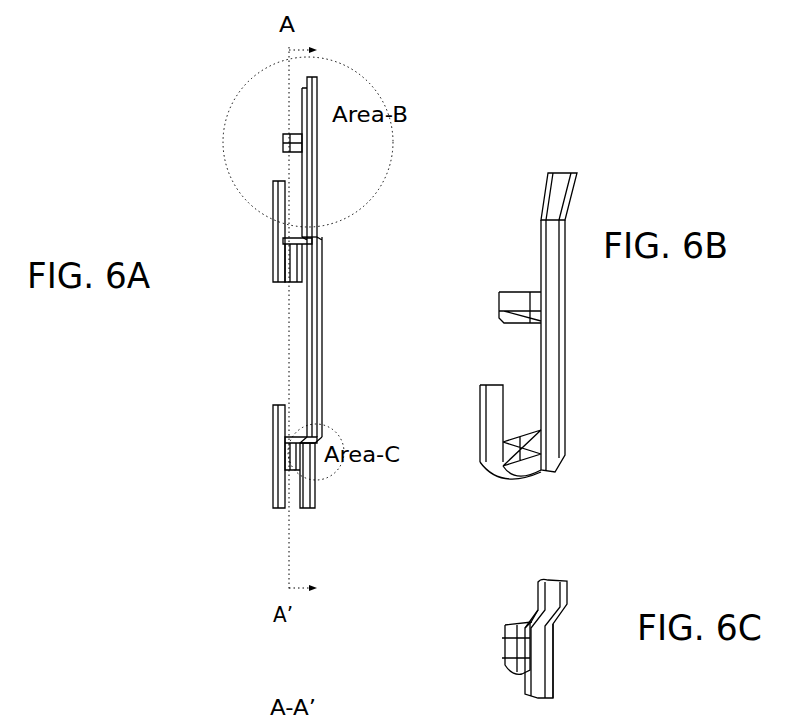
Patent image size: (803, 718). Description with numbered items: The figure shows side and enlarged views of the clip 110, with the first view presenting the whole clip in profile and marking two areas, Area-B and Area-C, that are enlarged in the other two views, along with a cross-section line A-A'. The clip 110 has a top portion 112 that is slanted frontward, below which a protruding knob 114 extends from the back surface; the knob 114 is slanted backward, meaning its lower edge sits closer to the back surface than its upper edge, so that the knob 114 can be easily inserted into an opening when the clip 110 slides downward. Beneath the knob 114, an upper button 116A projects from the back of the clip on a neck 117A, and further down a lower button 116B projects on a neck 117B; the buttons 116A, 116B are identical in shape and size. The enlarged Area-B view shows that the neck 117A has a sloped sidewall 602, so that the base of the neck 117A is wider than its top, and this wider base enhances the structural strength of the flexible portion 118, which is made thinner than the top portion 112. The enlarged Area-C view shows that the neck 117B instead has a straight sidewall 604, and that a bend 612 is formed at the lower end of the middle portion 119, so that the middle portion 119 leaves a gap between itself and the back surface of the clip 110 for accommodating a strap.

In FIG. 6A, the clip 110 is at (208, 88).
In FIG. 6A, the top portion 112 is at (320, 86).
In FIG. 6B, the top portion 112 is at (556, 203).
In FIG. 6A, the knob 114 is at (283, 142).
In FIG. 6B, the knob 114 is at (514, 306).
In FIG. 6A, the flexible portion 118 is at (316, 180).
In FIG. 6B, the flexible portion 118 is at (567, 373).
In FIG. 6A, the upper button 116A is at (275, 250).
In FIG. 6B, the upper button 116A is at (481, 430).
In FIG. 6A, the neck 117A is at (293, 240).
In FIG. 6B, the neck 117A is at (517, 467).
In FIG. 6A, the middle portion 119 is at (319, 346).
In FIG. 6C, the middle portion 119 is at (554, 598).
In FIG. 6A, the lower button 116B is at (275, 466).
In FIG. 6A, the neck 117B is at (295, 470).
In FIG. 6C, the neck 117B is at (513, 647).
In FIG. 6B, the sloped sidewall 602 is at (519, 449).
In FIG. 6C, the straight sidewall 604 is at (521, 623).
In FIG. 6C, the bend 612 is at (556, 628).